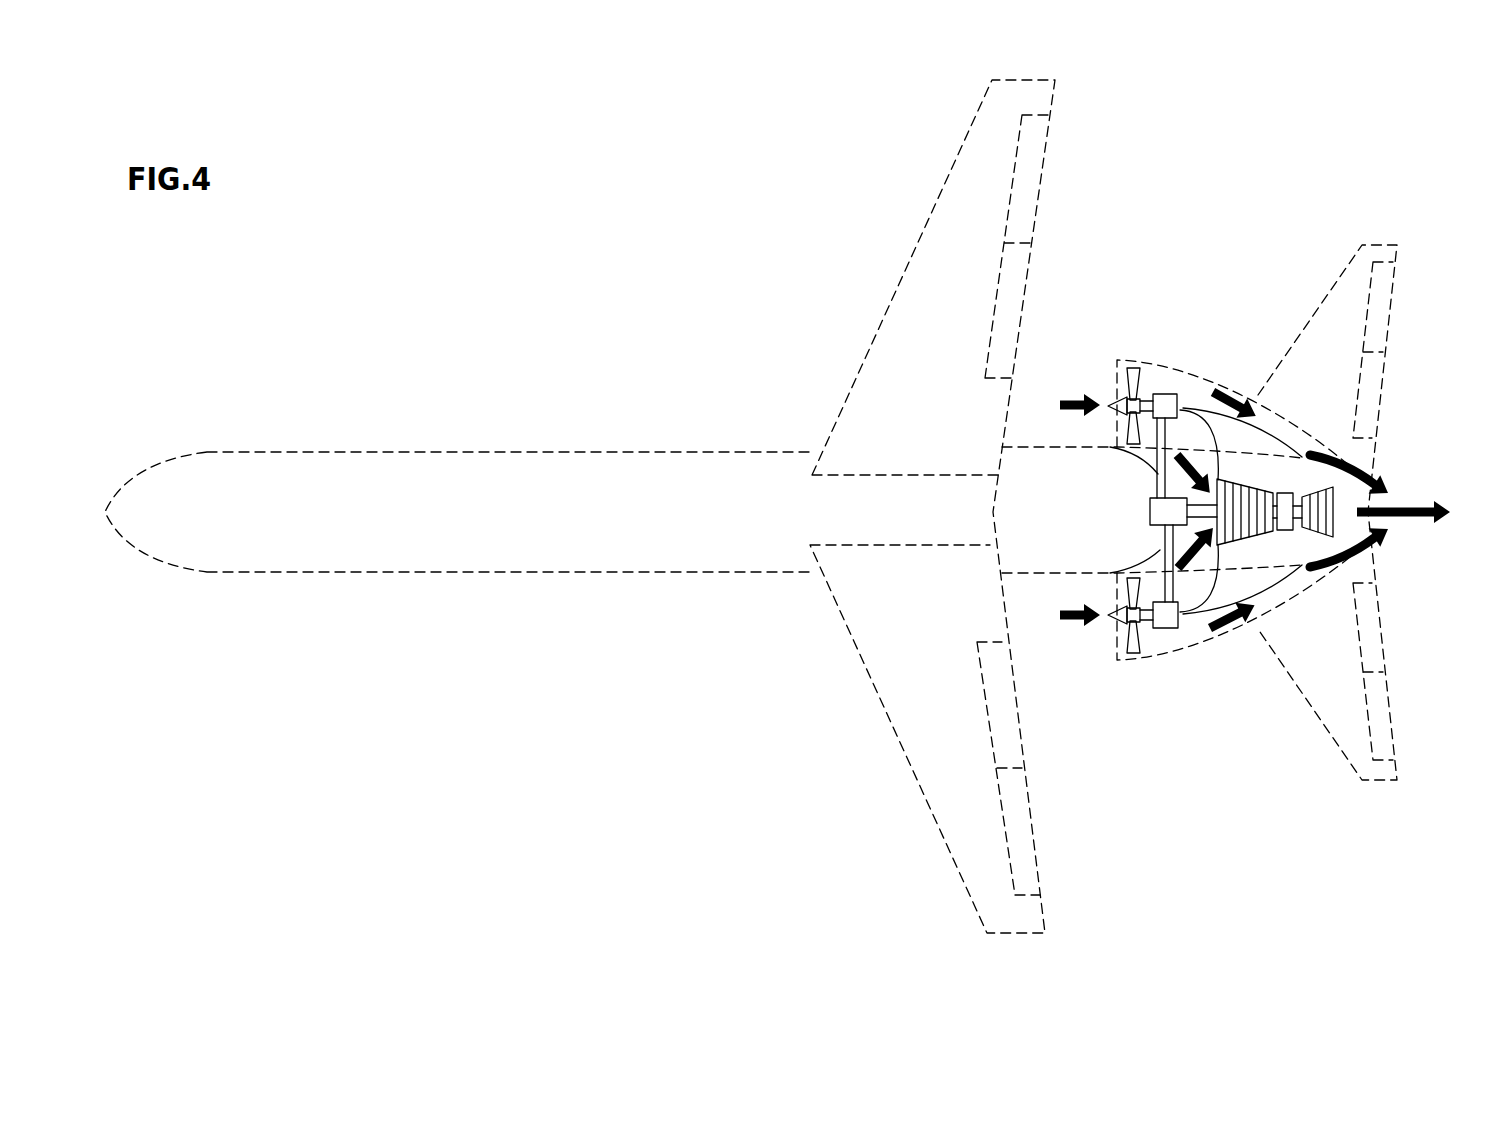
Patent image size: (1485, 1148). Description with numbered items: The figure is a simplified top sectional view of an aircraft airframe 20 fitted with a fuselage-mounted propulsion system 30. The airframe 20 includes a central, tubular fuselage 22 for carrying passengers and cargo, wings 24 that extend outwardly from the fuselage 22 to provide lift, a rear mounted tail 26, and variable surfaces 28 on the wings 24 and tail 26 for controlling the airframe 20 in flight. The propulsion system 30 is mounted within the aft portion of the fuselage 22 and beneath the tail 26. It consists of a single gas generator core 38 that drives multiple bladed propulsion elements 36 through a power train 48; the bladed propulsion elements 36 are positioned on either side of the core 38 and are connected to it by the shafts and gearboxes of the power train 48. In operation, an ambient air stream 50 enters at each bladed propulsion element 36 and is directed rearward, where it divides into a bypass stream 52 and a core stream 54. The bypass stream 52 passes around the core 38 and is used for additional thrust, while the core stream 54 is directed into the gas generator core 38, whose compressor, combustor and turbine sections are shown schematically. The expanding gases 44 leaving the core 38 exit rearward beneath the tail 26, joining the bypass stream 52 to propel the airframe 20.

The airframe 20 is at (766, 506).
The fuselage 22 is at (418, 453).
The wings 24 is at (873, 338).
The tail 26 is at (1307, 697).
The variable surfaces 28 is at (1020, 245).
The propulsion system 30 is at (1248, 475).
The bladed propulsion elements 36 is at (1107, 380).
The gas generator core 38 is at (1333, 487).
The expanding gases 44 is at (1415, 506).
The power train 48 is at (1147, 468).
The ambient air stream 50 is at (1080, 400).
The bypass stream 52 is at (1247, 398).
The core stream 54 is at (1192, 470).